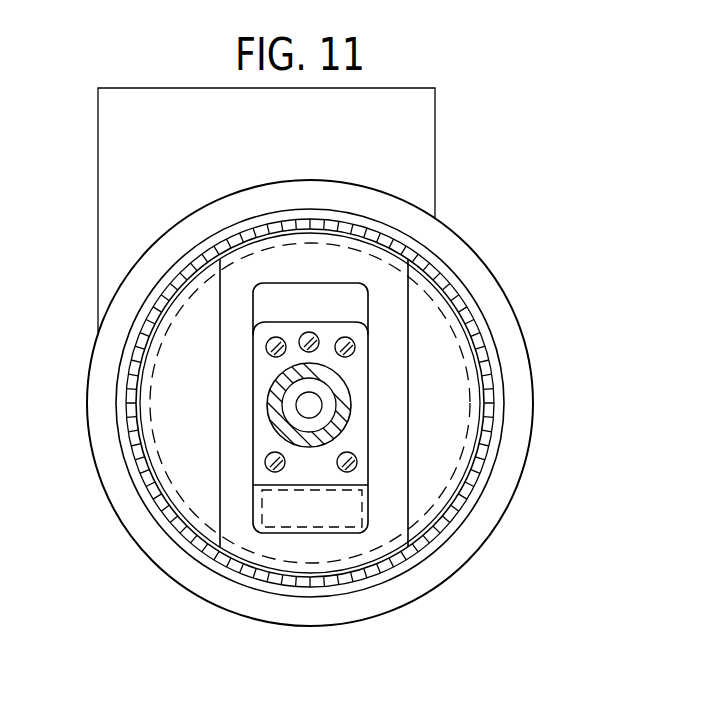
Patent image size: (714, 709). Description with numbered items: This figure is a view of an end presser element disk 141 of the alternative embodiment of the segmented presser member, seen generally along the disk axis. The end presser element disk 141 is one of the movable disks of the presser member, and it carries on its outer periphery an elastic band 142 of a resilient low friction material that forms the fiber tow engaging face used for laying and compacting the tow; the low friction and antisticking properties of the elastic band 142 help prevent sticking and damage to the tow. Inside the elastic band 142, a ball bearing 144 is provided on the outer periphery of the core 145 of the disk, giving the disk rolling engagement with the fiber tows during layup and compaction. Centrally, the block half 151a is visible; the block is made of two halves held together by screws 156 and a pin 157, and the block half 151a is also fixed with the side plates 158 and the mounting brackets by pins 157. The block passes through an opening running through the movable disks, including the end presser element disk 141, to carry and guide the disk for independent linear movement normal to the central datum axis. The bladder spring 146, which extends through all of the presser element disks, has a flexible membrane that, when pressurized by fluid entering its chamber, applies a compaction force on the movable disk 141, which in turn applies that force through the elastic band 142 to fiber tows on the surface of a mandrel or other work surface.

The end presser element disk 141 is at (538, 400).
The elastic band 142 is at (290, 615).
The ball bearing 144 is at (435, 525).
The core 145 is at (400, 483).
The bladder spring 146 is at (273, 522).
The block half 151a is at (350, 283).
The screw 156 is at (355, 347).
The pin 157 is at (308, 335).
The side plate 158 is at (378, 270).